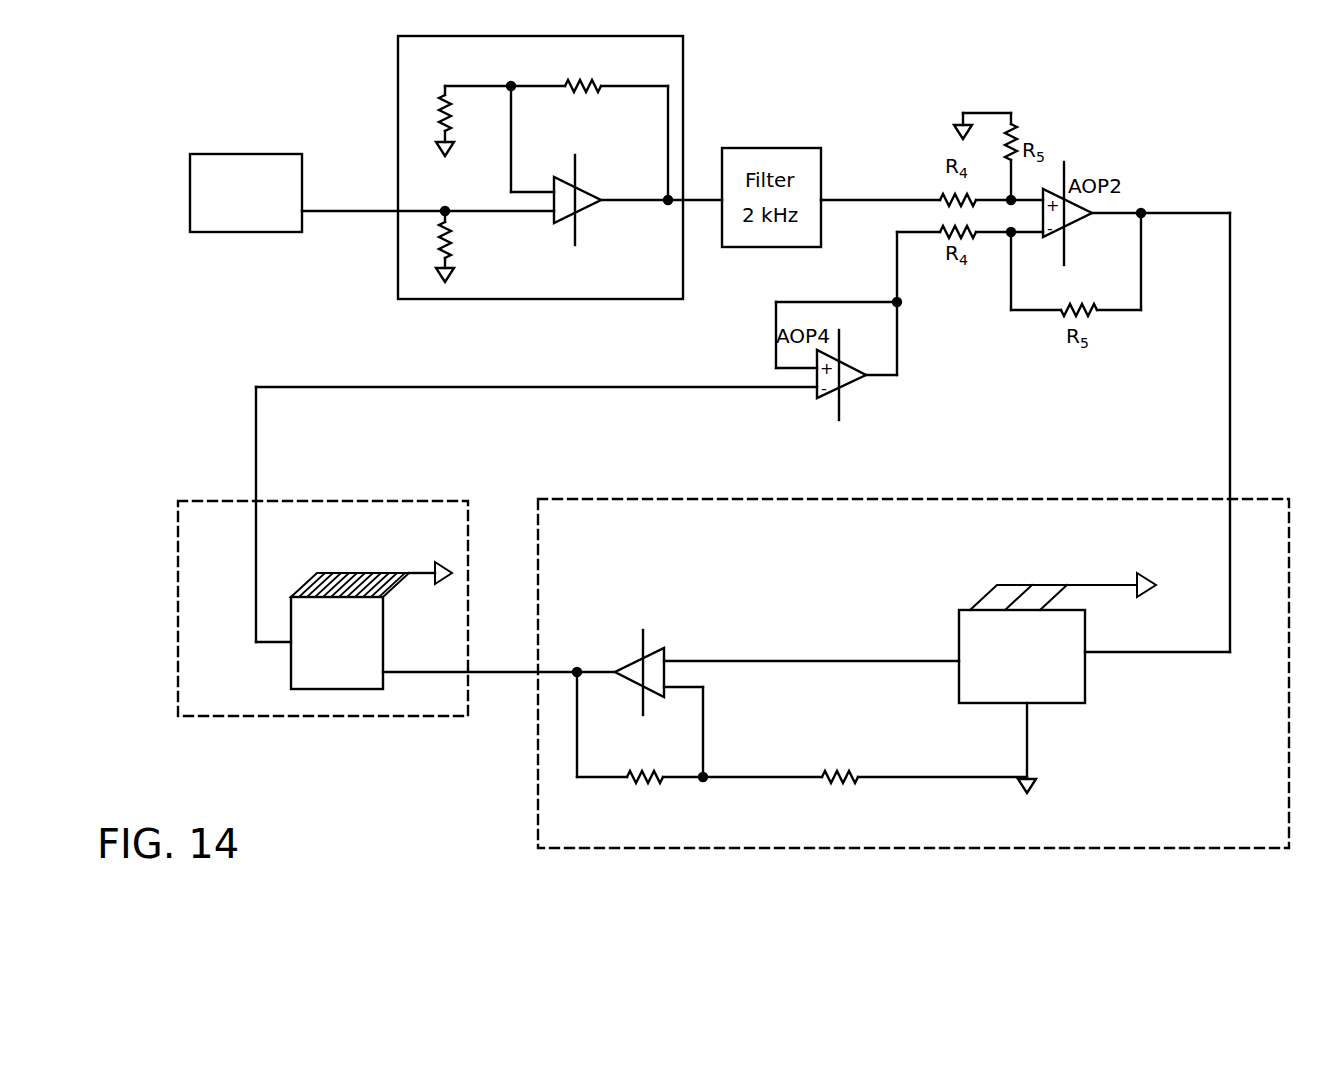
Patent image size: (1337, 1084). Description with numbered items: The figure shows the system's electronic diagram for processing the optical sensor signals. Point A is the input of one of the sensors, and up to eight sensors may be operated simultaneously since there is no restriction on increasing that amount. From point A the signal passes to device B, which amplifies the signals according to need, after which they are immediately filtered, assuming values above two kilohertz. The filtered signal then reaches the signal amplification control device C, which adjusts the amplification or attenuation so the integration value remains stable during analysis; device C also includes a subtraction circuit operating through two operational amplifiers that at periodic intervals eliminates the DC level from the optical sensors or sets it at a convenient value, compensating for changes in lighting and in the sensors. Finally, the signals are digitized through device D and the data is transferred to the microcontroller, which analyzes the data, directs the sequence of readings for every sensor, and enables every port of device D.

The sensor input point A is at (203, 213).
The signal amplification device B is at (503, 48).
The signal amplification control device C is at (973, 510).
The digitizing device D is at (345, 718).